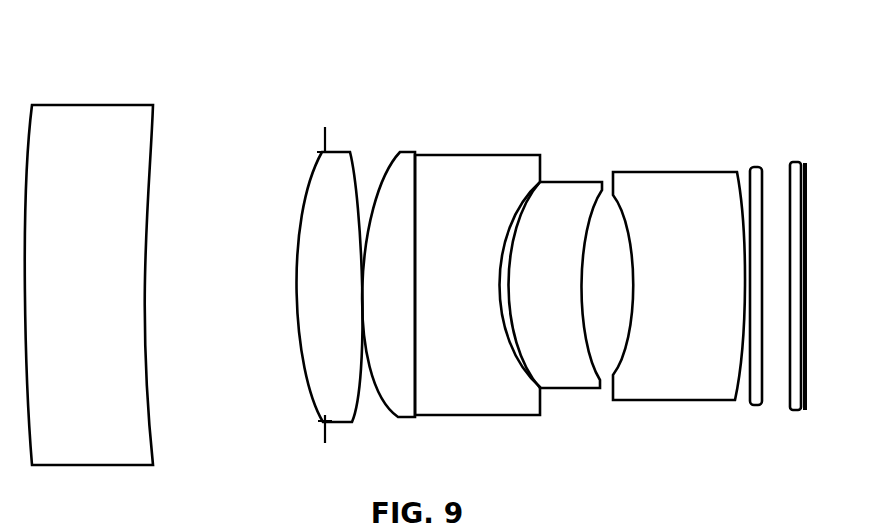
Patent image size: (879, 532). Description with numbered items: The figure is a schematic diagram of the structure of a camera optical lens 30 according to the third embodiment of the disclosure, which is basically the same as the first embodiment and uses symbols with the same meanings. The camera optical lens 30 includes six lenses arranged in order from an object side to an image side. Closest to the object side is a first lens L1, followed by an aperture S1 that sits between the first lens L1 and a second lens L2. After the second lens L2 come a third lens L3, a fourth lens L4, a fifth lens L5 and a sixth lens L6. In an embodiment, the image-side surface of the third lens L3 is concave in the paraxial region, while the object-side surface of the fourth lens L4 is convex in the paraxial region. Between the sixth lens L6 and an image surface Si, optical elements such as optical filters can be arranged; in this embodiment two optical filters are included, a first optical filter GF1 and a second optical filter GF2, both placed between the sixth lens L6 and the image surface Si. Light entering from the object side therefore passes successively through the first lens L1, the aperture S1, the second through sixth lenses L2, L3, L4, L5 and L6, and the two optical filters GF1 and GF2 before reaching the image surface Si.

The camera optical lens 30 is at (400, 35).
The first lens L1 is at (89, 272).
The aperture S1 is at (305, 285).
The second lens L2 is at (330, 271).
The third lens L3 is at (392, 272).
The fourth lens L4 is at (477, 274).
The fifth lens L5 is at (556, 271).
The sixth lens L6 is at (679, 272).
The first optical filter GF1 is at (752, 275).
The second optical filter GF2 is at (803, 273).
The image surface Si is at (820, 285).